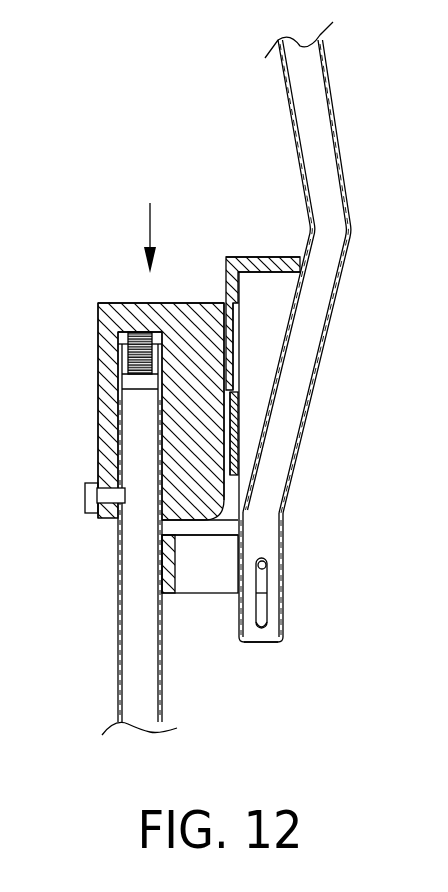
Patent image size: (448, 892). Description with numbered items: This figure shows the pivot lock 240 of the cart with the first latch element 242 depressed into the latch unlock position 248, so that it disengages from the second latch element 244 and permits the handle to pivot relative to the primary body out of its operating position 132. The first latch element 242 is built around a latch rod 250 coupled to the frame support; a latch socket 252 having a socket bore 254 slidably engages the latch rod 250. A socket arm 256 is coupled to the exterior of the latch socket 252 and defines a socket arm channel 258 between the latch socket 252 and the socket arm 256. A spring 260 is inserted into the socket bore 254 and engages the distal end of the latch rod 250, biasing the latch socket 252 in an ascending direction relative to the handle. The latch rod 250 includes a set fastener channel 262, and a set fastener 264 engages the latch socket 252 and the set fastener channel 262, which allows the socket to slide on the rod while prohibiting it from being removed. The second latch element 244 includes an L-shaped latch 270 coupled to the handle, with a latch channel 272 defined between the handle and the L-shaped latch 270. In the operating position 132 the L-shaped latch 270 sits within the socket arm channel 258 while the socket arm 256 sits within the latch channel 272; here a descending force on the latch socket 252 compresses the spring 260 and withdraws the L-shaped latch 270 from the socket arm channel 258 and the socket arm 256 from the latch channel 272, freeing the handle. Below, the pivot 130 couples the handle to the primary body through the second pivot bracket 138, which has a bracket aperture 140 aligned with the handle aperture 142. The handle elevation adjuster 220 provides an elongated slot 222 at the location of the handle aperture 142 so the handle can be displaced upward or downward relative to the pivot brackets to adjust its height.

The latch unlock position 248 is at (176, 95).
The operating position 132 is at (333, 108).
The second latch element 244 is at (278, 258).
The spring 260 is at (134, 336).
The pivot lock 240 is at (190, 303).
The first latch element 242 is at (98, 318).
The L-shaped latch 270 is at (240, 273).
The latch channel 272 is at (237, 350).
The latch socket 252 is at (98, 352).
The socket bore 254 is at (120, 393).
The latch rod 250 is at (128, 432).
The socket arm 256 is at (237, 417).
The socket arm channel 258 is at (227, 448).
The set fastener channel 262 is at (122, 453).
The set fastener 264 is at (87, 513).
The handle elevation adjuster 220 is at (264, 561).
The pivot 130 is at (264, 566).
The bracket aperture 140 is at (266, 578).
The elongated slot 222 is at (267, 614).
The second pivot bracket 138 is at (210, 593).
The handle aperture 142 is at (262, 628).